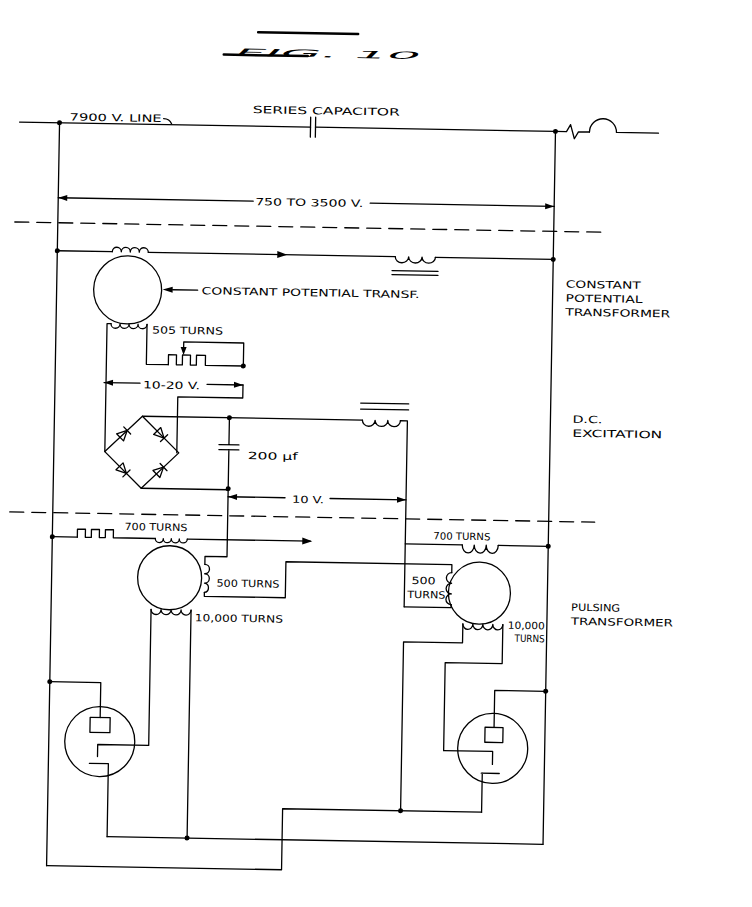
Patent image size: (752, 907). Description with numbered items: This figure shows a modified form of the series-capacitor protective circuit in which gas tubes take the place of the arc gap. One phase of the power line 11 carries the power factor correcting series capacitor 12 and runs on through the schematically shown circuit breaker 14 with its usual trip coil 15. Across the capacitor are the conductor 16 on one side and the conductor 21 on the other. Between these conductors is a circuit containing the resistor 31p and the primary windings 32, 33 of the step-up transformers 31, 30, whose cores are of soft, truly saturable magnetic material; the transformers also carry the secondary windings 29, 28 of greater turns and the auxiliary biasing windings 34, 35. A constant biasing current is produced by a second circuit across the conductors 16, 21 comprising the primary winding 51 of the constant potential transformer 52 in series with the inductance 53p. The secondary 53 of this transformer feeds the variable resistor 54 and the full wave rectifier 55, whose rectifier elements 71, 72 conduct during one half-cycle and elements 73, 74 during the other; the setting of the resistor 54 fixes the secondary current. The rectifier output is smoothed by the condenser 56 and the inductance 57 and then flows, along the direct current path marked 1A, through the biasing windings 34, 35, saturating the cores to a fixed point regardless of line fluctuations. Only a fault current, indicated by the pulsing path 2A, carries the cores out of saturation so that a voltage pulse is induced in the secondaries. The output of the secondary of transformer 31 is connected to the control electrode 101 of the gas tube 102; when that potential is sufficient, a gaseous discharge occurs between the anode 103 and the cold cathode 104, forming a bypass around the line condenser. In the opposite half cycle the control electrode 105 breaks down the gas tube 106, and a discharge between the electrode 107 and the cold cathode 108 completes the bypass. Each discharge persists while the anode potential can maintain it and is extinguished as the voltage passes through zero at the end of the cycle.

The power line 11 is at (27, 127).
The series capacitor 12 is at (310, 135).
The circuit breaker 14 is at (602, 117).
The trip coil 15 is at (566, 123).
The conductor 16 is at (53, 399).
The conductor 21 is at (550, 477).
The secondary winding 28 is at (472, 622).
The secondary winding 29 is at (162, 617).
The step-up transformer 30 is at (503, 593).
The step-up transformer 31 is at (145, 599).
The resistor 31p is at (79, 549).
The primary winding 32 is at (185, 541).
The primary winding 33 is at (490, 542).
The biasing winding 34 is at (209, 570).
The biasing winding 35 is at (450, 598).
The primary winding 51 is at (133, 253).
The transformer 52 is at (101, 311).
The secondary 53 is at (144, 323).
The inductance 53p is at (426, 256).
The variable resistor 54 is at (196, 366).
The full wave rectifier 55 is at (142, 450).
The smoothing condenser 56 is at (238, 446).
The inductance 57 is at (404, 417).
The rectifier element 71 is at (120, 437).
The rectifier element 72 is at (165, 475).
The rectifier element 73 is at (122, 478).
The rectifier element 74 is at (166, 440).
The direct current path 1A is at (411, 514).
The pulsing current path 2A is at (260, 540).
The control electrode 101 is at (111, 723).
The gas tube 102 is at (121, 712).
The anode 103 is at (99, 724).
The cold cathode 104 is at (99, 769).
The control electrode 105 is at (494, 755).
The gas tube 106 is at (482, 751).
The electrode 107 is at (507, 724).
The cold cathode 108 is at (499, 774).